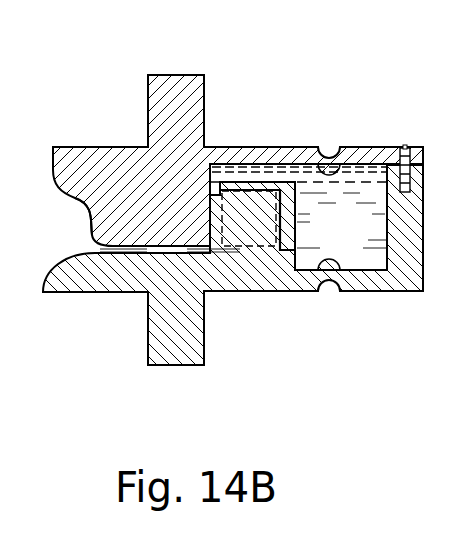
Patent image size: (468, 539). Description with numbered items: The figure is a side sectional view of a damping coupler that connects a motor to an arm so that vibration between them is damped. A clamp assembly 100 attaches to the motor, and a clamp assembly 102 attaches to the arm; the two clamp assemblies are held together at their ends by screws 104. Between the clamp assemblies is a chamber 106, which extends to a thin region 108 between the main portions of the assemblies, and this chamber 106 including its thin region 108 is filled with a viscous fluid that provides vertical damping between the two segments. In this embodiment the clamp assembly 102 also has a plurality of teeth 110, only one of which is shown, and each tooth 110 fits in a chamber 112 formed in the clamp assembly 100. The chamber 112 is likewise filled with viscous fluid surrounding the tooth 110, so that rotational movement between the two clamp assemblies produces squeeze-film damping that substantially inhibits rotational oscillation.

The clamp assembly 100 is at (134, 333).
The clamp assembly 102 is at (143, 113).
The screws 104 is at (404, 146).
The chamber 106 is at (324, 232).
The thin region 108 is at (112, 238).
The tooth 110 is at (255, 216).
The chamber 112 is at (272, 243).